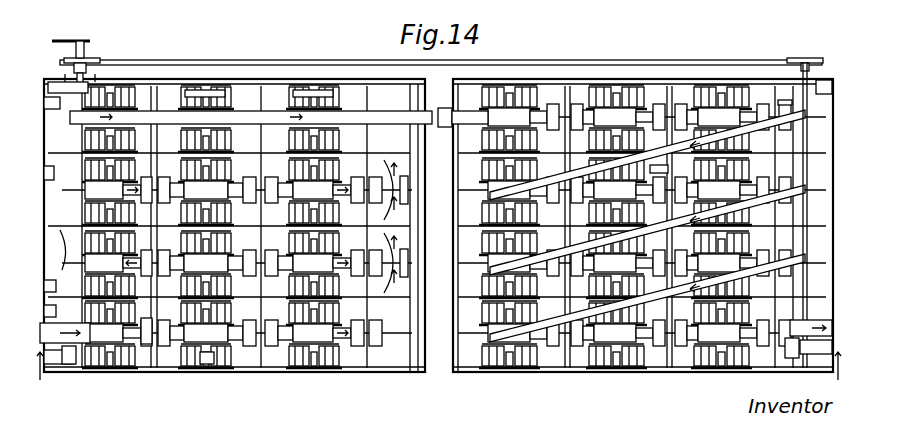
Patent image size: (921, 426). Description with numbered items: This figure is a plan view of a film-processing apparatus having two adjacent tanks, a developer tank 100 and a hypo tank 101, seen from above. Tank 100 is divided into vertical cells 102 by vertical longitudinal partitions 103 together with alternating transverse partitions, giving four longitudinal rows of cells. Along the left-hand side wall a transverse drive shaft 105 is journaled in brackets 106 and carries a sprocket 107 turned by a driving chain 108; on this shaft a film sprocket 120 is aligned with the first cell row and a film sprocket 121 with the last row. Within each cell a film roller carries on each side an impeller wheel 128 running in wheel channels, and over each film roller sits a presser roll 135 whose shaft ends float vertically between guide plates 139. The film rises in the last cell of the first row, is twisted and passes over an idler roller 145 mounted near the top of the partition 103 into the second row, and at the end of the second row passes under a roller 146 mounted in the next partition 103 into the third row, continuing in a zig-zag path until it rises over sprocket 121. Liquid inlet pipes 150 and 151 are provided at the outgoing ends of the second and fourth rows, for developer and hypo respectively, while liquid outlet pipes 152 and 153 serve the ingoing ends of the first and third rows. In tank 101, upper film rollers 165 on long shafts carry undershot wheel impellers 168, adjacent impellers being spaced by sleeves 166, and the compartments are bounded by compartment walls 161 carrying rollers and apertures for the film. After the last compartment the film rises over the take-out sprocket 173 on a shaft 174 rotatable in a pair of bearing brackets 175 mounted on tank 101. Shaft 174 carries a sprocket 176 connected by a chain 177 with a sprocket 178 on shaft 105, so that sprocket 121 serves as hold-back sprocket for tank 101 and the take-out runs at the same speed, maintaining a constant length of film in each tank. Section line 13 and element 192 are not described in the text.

The section line 13 is at (438, 372).
The tank 100 is at (218, 352).
The tank 101 is at (536, 374).
The vertical cells 102 is at (172, 366).
The vertical longitudinal partitions 103 is at (138, 128).
The transverse drive shaft 105 is at (90, 72).
The brackets 106 is at (68, 86).
The sprocket 107 is at (86, 57).
The driving chain 108 is at (82, 40).
The film sprocket 120 is at (78, 366).
The film sprocket 121 is at (80, 124).
The impeller wheel 128 is at (142, 88).
The presser roll 135 is at (304, 88).
The guide plates 139 is at (205, 366).
The idler roller 145 is at (400, 313).
The roller 146 is at (61, 251).
The liquid inlet pipe 150 is at (57, 286).
The liquid inlet pipe 151 is at (57, 103).
The liquid outlet pipe 152 is at (57, 312).
The liquid outlet pipe 153 is at (58, 173).
The compartment wall 161 is at (562, 380).
The upper film rollers 165 is at (490, 193).
The sleeves 166 is at (492, 150).
The undershot wheel impellers 168 is at (490, 172).
The take-out sprocket 173 is at (786, 372).
The shaft 174 is at (784, 70).
The bearing brackets 175 is at (828, 78).
The sprocket 176 is at (800, 56).
The chain 177 is at (642, 60).
The sprocket 178 is at (96, 62).
The coupling block 192 is at (146, 332).